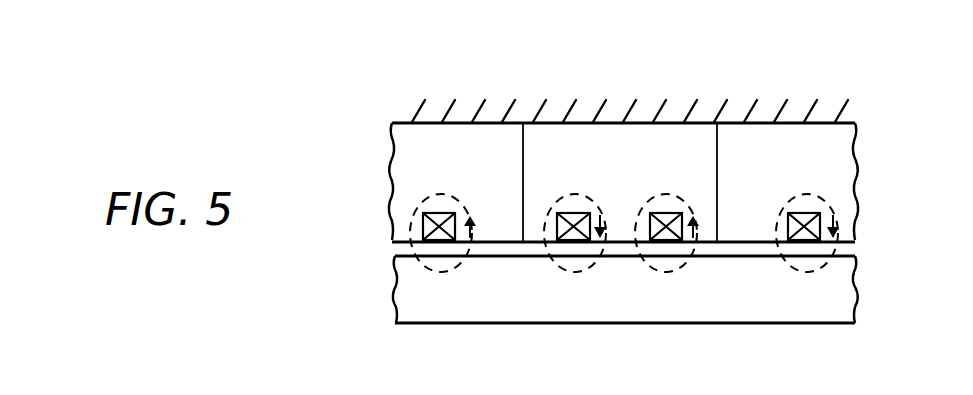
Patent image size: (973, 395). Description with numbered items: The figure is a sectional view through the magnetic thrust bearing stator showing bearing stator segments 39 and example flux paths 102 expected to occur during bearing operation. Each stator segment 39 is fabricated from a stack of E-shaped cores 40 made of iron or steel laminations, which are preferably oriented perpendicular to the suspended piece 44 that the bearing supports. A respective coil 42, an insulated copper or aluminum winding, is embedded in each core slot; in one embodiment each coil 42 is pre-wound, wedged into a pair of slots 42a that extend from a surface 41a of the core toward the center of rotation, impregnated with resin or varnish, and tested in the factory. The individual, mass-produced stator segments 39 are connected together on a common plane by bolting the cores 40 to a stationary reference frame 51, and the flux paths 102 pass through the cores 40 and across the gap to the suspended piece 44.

The bearing stator segment 39 is at (448, 92).
The E-shaped core 40 is at (744, 138).
The stationary reference frame 51 is at (840, 117).
The coil 42 is at (439, 213).
The slot 42a is at (682, 266).
The core surface 41a is at (523, 243).
The suspended piece 44 is at (848, 302).
The flux path 102 is at (790, 270).